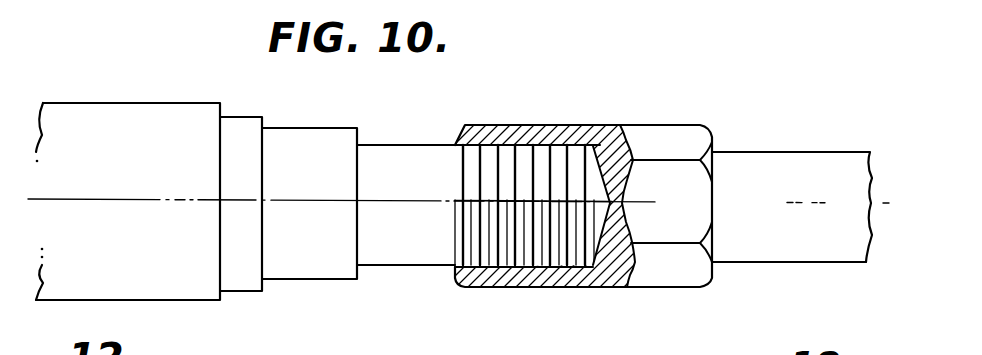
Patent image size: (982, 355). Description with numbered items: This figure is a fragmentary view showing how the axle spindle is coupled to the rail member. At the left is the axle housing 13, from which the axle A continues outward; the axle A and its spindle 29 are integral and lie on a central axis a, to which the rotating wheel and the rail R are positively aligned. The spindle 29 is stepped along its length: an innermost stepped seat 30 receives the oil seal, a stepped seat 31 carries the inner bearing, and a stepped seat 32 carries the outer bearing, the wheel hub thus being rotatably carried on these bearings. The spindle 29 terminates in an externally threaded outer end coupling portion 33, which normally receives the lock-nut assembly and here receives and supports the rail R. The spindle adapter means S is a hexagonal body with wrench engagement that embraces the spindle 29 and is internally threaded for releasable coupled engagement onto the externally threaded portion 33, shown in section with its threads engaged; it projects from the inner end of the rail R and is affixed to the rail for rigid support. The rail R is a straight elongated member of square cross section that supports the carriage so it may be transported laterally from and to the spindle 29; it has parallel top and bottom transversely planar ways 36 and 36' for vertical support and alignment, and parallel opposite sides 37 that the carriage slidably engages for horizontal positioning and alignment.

The axle housing 13 is at (150, 108).
The central axis a is at (110, 199).
The axle A is at (288, 199).
The innermost stepped seat 30 is at (243, 293).
The stepped seat for the inner bearing 31 is at (313, 281).
The stepped seat for the outer bearing 32 is at (390, 268).
The spindle 29 is at (413, 148).
The spindle adapter means S is at (543, 200).
The externally threaded outer end coupling portion 33 is at (507, 268).
The rail R is at (792, 185).
The top transversely planar way 36 is at (792, 183).
The bottom transversely planar way 36' is at (789, 283).
The side of the rail 37 is at (805, 172).